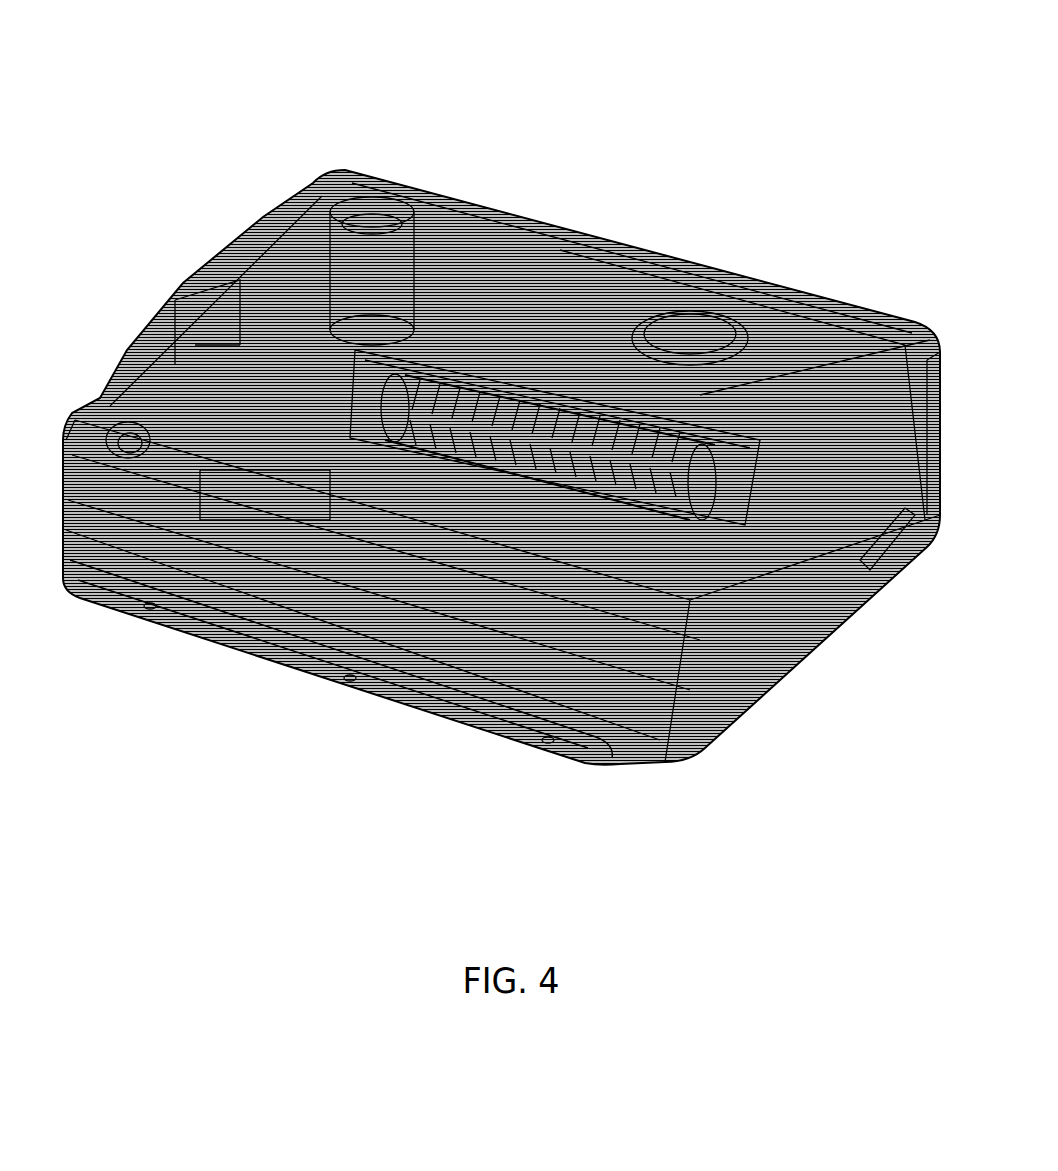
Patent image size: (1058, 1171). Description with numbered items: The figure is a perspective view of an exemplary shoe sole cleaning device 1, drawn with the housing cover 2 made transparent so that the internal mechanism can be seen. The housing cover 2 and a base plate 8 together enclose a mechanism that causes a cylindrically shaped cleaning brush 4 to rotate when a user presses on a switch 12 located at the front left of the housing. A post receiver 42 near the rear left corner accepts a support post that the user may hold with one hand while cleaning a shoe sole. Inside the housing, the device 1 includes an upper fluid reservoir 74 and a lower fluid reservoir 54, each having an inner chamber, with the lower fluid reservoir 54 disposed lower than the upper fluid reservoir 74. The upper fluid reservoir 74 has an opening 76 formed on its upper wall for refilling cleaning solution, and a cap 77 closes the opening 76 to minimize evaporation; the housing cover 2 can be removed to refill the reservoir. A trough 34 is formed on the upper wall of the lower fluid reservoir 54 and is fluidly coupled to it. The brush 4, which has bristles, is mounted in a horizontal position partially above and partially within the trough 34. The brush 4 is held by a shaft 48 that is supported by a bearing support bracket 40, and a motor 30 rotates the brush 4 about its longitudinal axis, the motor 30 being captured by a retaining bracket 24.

The shoe sole cleaning device 1 is at (627, 115).
The housing cover 2 is at (272, 250).
The cleaning brush 4 is at (500, 400).
The base plate 8 is at (308, 670).
The switch 12 is at (118, 393).
The retaining bracket 24 is at (250, 345).
The motor 30 is at (262, 412).
The trough 34 is at (740, 447).
The bearing support bracket 40 is at (312, 490).
The post receiver 42 is at (386, 218).
The shaft 48 is at (448, 400).
The lower fluid reservoir 54 is at (880, 568).
The upper fluid reservoir 74 is at (852, 375).
The opening 76 is at (688, 312).
The cap 77 is at (718, 320).